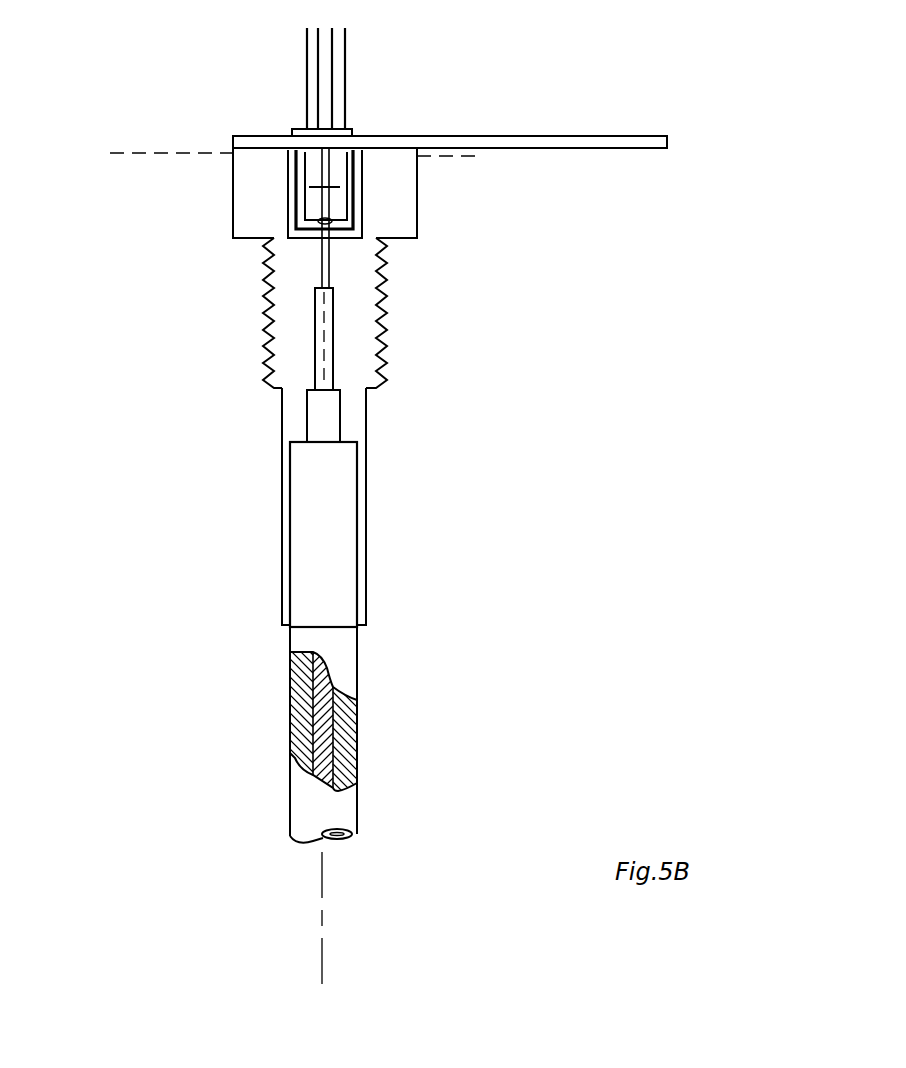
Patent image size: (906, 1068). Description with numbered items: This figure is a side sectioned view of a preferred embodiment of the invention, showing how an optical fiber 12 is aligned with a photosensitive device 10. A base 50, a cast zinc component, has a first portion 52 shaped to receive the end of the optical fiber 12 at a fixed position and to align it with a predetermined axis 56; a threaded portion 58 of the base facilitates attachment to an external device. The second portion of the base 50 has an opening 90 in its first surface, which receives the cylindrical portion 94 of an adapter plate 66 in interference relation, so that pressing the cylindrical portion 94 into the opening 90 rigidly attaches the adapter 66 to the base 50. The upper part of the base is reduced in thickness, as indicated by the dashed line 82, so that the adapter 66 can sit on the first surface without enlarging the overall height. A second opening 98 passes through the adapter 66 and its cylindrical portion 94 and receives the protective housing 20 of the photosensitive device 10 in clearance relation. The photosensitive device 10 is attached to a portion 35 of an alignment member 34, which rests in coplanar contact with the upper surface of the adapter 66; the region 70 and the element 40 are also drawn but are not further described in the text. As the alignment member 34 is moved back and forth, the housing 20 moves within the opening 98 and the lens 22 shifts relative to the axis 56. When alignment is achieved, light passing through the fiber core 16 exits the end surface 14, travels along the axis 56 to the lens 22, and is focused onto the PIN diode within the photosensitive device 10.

The photosensitive device 10 is at (268, 106).
The optical fiber 12 is at (348, 650).
The end of the fiber core 14 is at (330, 440).
The fiber core 16 is at (322, 727).
The protective housing 20 is at (324, 175).
The lens 22 is at (318, 240).
The alignment member 34 is at (585, 146).
The portion of the alignment member 35 is at (243, 138).
The connector base 40 is at (352, 130).
The base 50 is at (393, 232).
The first portion of the base 52 is at (362, 518).
The predetermined axis 56 is at (333, 364).
The threaded portion of the base 58 is at (392, 305).
The adapter plate 66 is at (232, 153).
The plate surface 70 is at (420, 141).
The dashed line 82 is at (112, 153).
The opening 90 is at (360, 180).
The cylindrical portion 94 is at (293, 208).
The second opening 98 is at (297, 177).